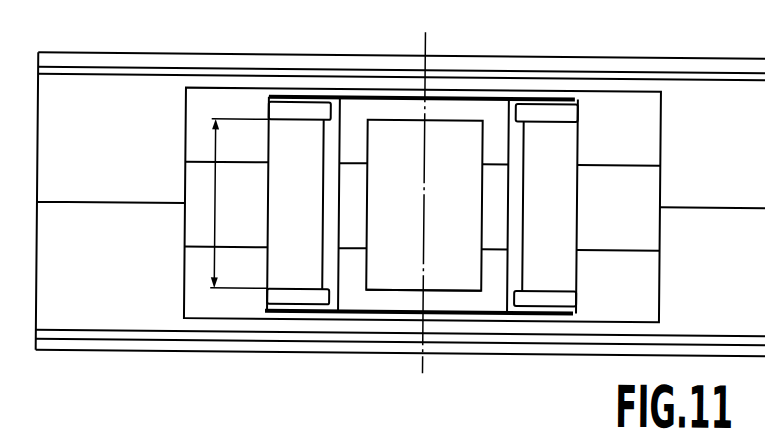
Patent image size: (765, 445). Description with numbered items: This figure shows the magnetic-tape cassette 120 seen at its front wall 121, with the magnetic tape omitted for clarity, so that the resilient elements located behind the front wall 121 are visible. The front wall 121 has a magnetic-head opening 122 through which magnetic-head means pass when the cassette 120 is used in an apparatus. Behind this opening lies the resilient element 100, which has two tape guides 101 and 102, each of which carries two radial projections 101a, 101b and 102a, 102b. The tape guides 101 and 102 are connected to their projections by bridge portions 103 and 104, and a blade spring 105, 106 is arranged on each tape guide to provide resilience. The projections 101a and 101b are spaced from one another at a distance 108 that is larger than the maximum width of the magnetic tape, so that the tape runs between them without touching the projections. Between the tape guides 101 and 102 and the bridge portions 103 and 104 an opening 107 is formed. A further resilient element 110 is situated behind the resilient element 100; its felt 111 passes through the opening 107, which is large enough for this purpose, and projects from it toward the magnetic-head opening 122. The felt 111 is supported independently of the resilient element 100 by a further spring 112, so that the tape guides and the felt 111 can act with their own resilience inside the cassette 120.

The resilient element 100 is at (259, 320).
The tape guide 101 is at (281, 196).
The radial projection 101a is at (283, 111).
The radial projection 101b is at (307, 298).
The tape guide 102 is at (564, 198).
The radial projection 102a is at (557, 111).
The radial projection 102b is at (549, 299).
The bridge portion 103 is at (388, 106).
The bridge portion 104 is at (364, 313).
The blade spring 105 is at (195, 190).
The blade spring 106 is at (645, 185).
The opening 107 is at (452, 304).
The distance 108 is at (215, 226).
The further resilient element 110 is at (486, 110).
The felt 111 is at (451, 141).
The further spring 112 is at (354, 177).
The magnetic-tape cassette 120 is at (702, 48).
The front wall 121 is at (80, 103).
The magnetic-head opening 122 is at (647, 299).